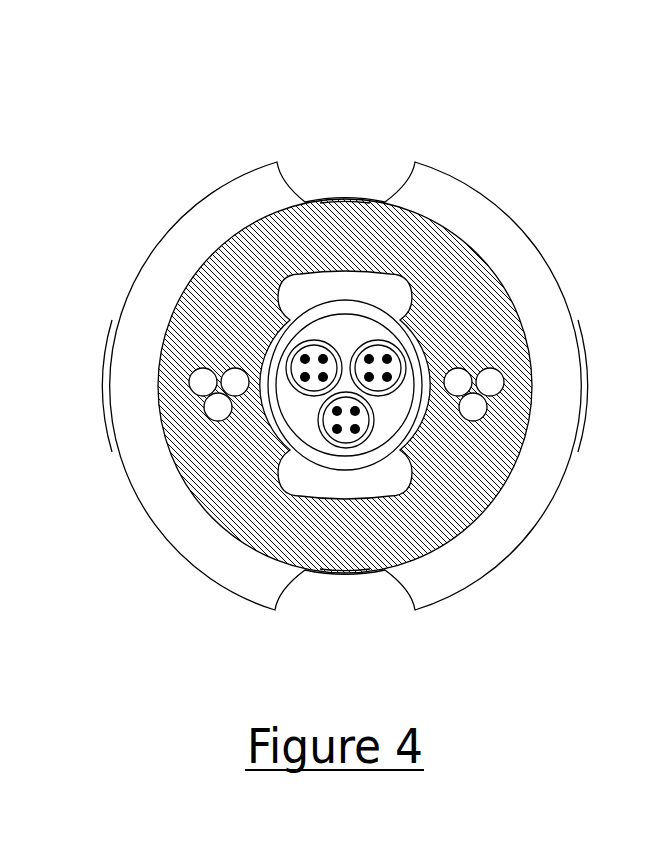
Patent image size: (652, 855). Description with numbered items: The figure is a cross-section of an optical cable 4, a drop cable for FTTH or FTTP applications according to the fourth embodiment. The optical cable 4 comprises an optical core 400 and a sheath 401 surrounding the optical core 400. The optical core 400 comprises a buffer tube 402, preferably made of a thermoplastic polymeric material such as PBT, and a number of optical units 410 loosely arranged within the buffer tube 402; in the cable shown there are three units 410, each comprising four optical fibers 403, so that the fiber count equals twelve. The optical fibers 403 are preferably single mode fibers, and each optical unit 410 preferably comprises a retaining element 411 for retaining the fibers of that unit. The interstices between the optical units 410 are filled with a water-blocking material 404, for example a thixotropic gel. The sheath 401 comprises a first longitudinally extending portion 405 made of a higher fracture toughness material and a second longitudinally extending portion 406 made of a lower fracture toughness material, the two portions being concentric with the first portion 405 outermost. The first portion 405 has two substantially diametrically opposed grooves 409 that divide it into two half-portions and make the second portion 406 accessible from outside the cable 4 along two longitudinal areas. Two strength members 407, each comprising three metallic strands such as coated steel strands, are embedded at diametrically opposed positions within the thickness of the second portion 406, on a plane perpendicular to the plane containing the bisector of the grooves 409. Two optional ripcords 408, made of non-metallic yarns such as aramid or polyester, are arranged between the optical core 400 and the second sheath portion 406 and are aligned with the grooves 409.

The optical cable 4 is at (182, 122).
The optical core 400 is at (268, 332).
The sheath 401 is at (482, 180).
The buffer tube 402 is at (425, 353).
The optical fibers 403 is at (390, 373).
The water-blocking material 404 is at (300, 412).
The first longitudinally extending portion 405 is at (116, 340).
The second longitudinally extending portion 406 is at (203, 513).
The strength members 407 is at (200, 403).
The ripcords 408 is at (293, 278).
The grooves 409 is at (350, 200).
The optical units 410 is at (368, 333).
The retaining element 411 is at (380, 388).